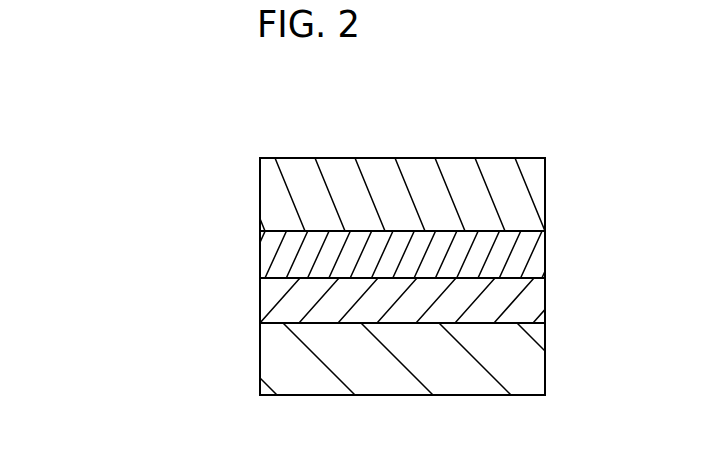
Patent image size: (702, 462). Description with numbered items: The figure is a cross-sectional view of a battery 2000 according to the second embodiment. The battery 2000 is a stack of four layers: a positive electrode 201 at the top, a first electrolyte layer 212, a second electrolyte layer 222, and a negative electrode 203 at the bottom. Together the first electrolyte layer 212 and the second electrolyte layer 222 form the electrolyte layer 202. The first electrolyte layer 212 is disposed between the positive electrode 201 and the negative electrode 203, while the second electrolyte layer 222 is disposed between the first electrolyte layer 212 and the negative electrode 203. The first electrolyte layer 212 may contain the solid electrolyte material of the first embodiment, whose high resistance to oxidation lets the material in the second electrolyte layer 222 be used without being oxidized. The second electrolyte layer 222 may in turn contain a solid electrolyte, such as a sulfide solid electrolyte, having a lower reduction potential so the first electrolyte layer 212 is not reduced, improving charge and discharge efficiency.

The battery 2000 is at (422, 104).
The positive electrode 201 is at (280, 190).
The electrolyte layer 202 is at (322, 284).
The first electrolyte layer 212 is at (278, 253).
The second electrolyte layer 222 is at (280, 296).
The negative electrode 203 is at (278, 361).